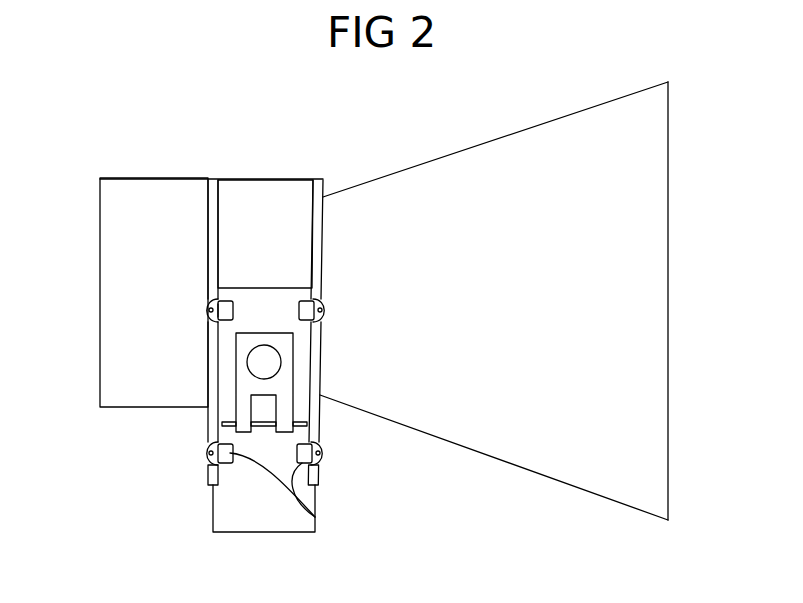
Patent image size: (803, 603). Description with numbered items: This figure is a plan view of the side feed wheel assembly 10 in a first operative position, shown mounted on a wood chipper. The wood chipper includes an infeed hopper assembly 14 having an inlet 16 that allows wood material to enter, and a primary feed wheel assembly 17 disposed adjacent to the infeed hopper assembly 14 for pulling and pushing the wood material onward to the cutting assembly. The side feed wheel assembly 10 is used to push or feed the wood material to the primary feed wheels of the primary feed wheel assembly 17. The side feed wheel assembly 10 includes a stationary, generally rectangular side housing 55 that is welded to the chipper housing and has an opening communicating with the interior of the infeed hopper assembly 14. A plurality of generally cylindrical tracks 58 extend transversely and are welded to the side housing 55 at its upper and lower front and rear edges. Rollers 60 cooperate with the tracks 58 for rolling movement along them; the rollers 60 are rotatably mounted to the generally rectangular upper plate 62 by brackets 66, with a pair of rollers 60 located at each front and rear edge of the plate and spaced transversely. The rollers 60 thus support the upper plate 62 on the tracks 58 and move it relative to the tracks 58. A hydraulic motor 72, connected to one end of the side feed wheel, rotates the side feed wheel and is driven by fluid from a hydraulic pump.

The side feed wheel assembly 10 is at (158, 446).
The infeed hopper assembly 14 is at (535, 122).
The inlet 16 is at (669, 170).
The primary feed wheel assembly 17 is at (245, 179).
The side housing 55 is at (322, 420).
The tracks 58 is at (212, 197).
The rollers 60 is at (208, 462).
The upper plate 62 is at (241, 520).
The brackets 66 is at (315, 517).
The hydraulic motor 72 is at (260, 362).